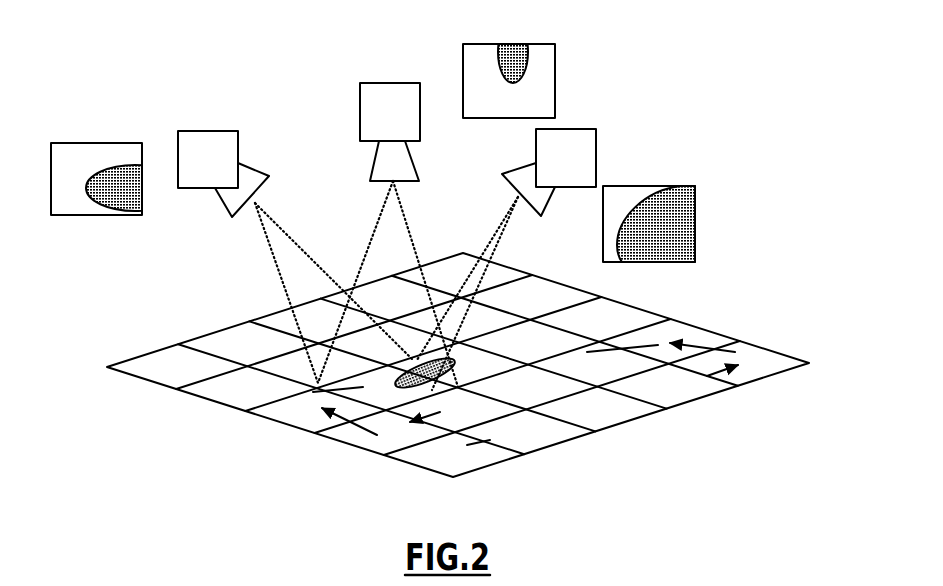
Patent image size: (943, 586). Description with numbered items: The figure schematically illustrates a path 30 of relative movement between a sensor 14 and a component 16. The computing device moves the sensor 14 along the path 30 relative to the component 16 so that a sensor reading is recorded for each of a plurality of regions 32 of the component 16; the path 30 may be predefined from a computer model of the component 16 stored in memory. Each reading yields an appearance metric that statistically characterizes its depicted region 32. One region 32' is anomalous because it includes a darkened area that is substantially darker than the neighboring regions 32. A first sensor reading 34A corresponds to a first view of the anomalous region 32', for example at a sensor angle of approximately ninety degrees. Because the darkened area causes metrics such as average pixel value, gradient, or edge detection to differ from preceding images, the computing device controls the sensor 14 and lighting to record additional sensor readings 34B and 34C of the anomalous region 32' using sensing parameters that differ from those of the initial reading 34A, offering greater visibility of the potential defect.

The sensor 14 is at (205, 131).
The component 16 is at (788, 342).
The path 30 is at (603, 407).
The region 32 is at (187, 351).
The anomalous region 32' is at (275, 427).
The first sensor reading 34A is at (483, 44).
The additional sensor reading 34B is at (109, 177).
The additional sensor reading 34C is at (652, 186).